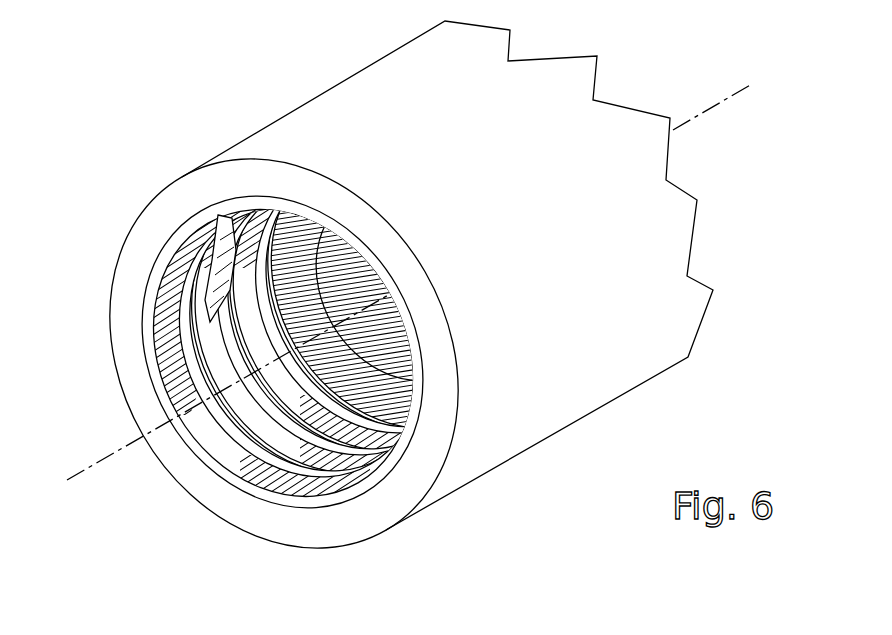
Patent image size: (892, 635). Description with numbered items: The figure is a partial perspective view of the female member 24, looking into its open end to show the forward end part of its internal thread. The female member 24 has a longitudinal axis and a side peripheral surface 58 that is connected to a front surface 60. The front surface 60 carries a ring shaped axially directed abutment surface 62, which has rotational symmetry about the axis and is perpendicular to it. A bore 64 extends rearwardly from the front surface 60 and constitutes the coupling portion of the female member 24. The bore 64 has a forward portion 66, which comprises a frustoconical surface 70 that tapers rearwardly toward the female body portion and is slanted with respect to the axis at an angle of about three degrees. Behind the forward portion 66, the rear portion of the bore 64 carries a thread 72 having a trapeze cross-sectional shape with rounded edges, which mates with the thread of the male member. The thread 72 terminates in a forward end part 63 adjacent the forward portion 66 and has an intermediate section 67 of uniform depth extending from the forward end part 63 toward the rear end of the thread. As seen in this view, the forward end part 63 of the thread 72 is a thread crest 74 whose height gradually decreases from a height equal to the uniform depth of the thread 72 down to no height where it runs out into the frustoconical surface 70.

The female member 24 is at (290, 62).
The side peripheral surface 58 is at (230, 97).
The front surface 60 is at (124, 326).
The ring shaped axially directed abutment surface 62 is at (130, 372).
The forward end part 63 is at (204, 319).
The bore 64 is at (240, 418).
The forward portion 66 is at (300, 500).
The intermediate section 67 is at (292, 262).
The frustoconical surface 70 is at (284, 470).
The thread 72 is at (348, 441).
The thread crest 74 is at (222, 285).